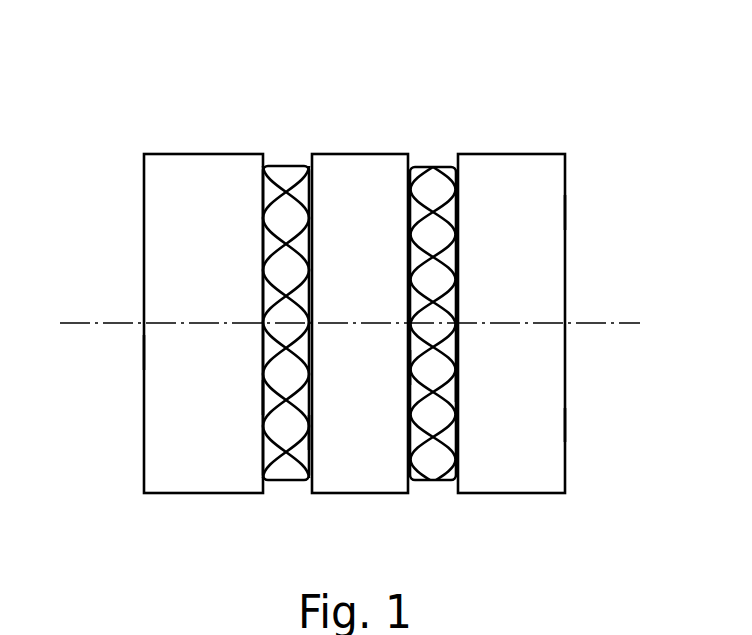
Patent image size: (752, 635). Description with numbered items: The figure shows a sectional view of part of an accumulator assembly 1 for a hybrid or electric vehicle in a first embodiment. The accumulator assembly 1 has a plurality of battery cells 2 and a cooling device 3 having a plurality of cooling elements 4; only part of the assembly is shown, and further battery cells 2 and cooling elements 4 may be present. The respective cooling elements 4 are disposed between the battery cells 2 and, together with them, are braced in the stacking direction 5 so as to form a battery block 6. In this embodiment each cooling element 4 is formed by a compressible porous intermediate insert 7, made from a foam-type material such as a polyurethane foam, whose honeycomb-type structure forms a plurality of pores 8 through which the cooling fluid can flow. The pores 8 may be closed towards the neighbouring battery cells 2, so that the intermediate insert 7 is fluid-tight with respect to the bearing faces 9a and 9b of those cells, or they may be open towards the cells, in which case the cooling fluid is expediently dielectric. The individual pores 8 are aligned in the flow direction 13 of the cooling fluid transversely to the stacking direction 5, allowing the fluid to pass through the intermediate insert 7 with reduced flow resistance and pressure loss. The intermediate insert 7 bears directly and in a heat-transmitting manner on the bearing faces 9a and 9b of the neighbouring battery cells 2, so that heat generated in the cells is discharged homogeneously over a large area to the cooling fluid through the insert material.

The accumulator assembly 1 is at (612, 162).
The battery cell 2 is at (194, 273).
The cooling device 3 is at (450, 57).
The cooling element 4 is at (288, 160).
The intermediate insert 7 is at (331, 319).
The flow direction 13 is at (292, 200).
The pore 8 is at (275, 440).
The bearing face 9a is at (262, 397).
The bearing face 9b is at (143, 350).
The battery block 6 is at (575, 212).
The stacking direction 5 is at (619, 323).